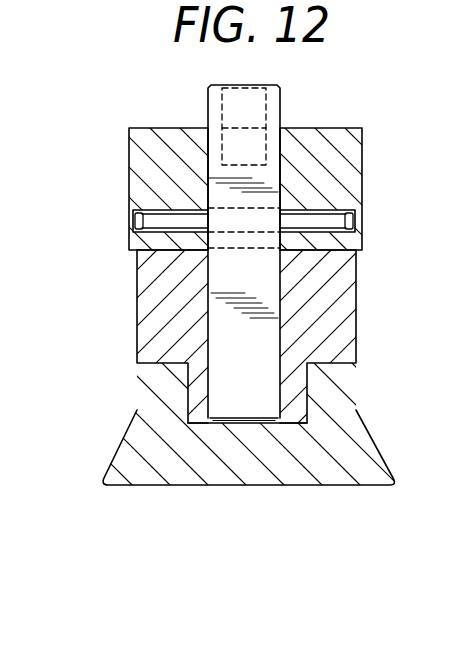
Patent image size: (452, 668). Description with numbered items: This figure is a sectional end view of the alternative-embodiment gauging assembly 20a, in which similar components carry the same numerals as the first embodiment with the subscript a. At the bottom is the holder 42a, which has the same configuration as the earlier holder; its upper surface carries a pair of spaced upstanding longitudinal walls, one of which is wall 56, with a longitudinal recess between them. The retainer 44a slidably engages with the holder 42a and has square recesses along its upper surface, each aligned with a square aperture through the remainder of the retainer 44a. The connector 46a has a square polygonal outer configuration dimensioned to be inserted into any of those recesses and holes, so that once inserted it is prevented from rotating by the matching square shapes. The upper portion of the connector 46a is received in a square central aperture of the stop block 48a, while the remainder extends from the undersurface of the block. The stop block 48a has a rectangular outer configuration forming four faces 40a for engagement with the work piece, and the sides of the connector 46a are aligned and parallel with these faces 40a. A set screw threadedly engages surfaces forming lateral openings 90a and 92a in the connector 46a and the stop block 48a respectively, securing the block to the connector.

The gauging assembly 20a is at (124, 112).
The upstanding longitudinal wall 56 is at (293, 156).
The stop block 48a is at (129, 180).
The faces 40a is at (364, 180).
The lateral opening 92a is at (358, 224).
The lateral opening 90a is at (225, 222).
The retainer 44a is at (135, 310).
The connector 46a is at (258, 343).
The holder 42a is at (232, 488).